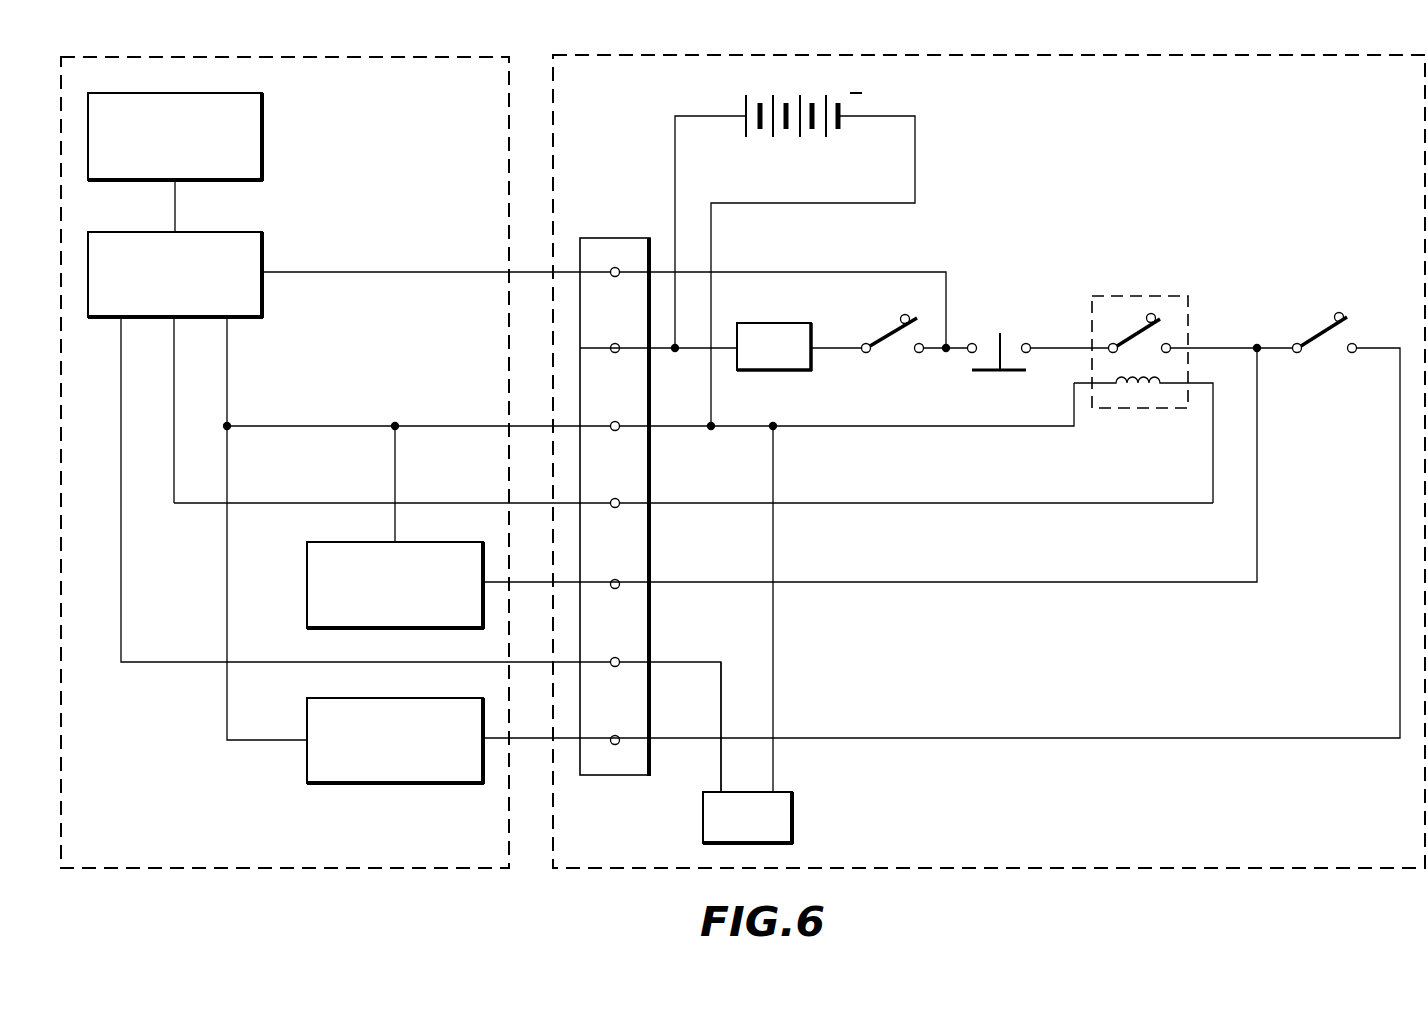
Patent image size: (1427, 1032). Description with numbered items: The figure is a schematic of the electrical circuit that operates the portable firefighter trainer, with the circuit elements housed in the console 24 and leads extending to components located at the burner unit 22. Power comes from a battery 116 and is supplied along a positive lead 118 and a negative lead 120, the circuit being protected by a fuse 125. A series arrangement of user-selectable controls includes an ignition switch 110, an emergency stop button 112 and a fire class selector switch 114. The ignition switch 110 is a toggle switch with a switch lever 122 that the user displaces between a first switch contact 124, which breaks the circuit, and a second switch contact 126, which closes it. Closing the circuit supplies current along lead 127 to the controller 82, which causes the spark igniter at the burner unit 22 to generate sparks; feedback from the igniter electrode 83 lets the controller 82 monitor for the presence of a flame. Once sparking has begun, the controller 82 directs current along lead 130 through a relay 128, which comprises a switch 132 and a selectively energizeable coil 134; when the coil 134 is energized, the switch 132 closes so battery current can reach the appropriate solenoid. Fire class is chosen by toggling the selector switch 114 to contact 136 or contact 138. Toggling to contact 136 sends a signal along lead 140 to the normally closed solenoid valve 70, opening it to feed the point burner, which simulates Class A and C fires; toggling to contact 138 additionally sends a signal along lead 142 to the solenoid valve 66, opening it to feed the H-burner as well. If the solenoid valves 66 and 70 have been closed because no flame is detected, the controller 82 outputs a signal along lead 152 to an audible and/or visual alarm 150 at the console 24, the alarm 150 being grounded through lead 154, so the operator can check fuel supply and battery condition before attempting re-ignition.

The burner unit 22 is at (164, 811).
The console 24 is at (1030, 816).
The solenoid valve 66 is at (322, 784).
The solenoid valve 70 is at (307, 598).
The controller 82 is at (258, 301).
The igniter electrode 83 is at (258, 154).
The ignition switch 110 is at (912, 324).
The emergency stop button 112 is at (1012, 328).
The fire class selector switch 114 is at (1357, 369).
The battery 116 is at (785, 148).
The positive lead 118 is at (676, 114).
The negative lead 120 is at (808, 203).
The switch lever 122 is at (888, 330).
The first switch contact 124 is at (905, 313).
The fuse 125 is at (812, 372).
The second switch contact 126 is at (922, 353).
The lead 127 is at (427, 270).
The relay 128 is at (1126, 356).
The lead 130 is at (264, 503).
The switch 132 is at (1125, 330).
The coil 134 is at (1138, 388).
The contact 136 is at (1345, 316).
The contact 138 is at (1352, 353).
The lead 140 is at (1257, 556).
The lead 142 is at (1400, 580).
The alarm 150 is at (703, 826).
The lead 152 is at (721, 760).
The lead 154 is at (775, 775).